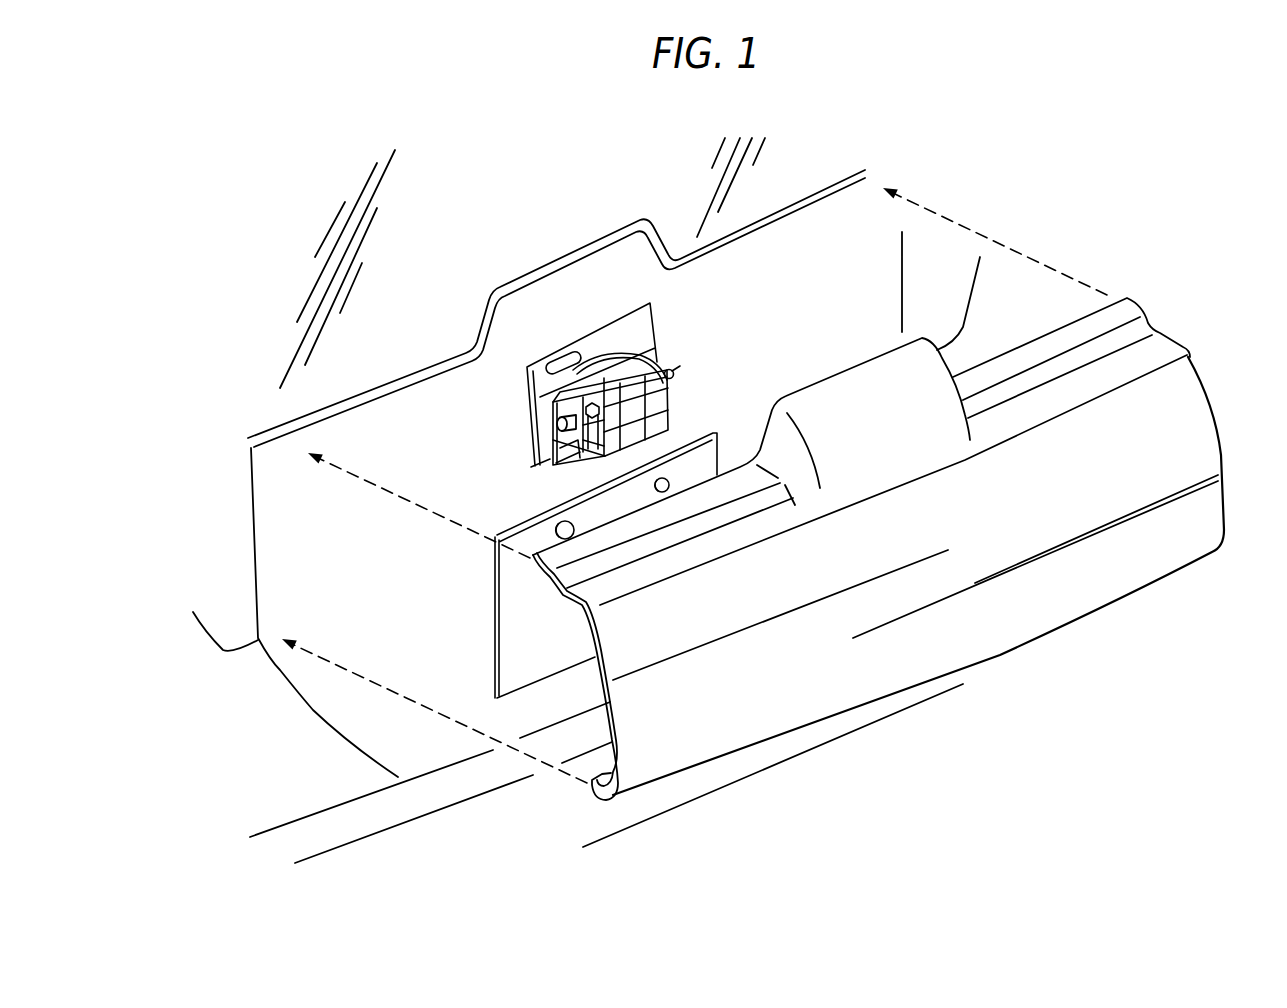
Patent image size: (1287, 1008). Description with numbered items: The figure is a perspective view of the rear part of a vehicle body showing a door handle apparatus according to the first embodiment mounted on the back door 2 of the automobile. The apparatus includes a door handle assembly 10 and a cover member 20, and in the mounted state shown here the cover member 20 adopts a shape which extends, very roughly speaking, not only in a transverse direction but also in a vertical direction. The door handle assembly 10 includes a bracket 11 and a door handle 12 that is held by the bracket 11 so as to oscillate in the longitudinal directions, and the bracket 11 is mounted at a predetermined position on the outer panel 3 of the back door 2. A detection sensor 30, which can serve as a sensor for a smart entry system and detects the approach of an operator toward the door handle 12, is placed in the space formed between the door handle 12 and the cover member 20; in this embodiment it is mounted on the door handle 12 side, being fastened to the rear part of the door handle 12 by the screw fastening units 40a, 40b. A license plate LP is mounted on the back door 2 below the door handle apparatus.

The back door 2 is at (313, 762).
The outer panel 3 is at (570, 302).
The door handle assembly 10 is at (672, 334).
The bracket 11 is at (557, 422).
The door handle 12 is at (575, 463).
The cover member 20 is at (1015, 618).
The detection sensor 30 is at (680, 373).
The screw fastening unit 40a is at (597, 465).
The screw fastening unit 40b is at (686, 390).
The license plate LP is at (518, 610).